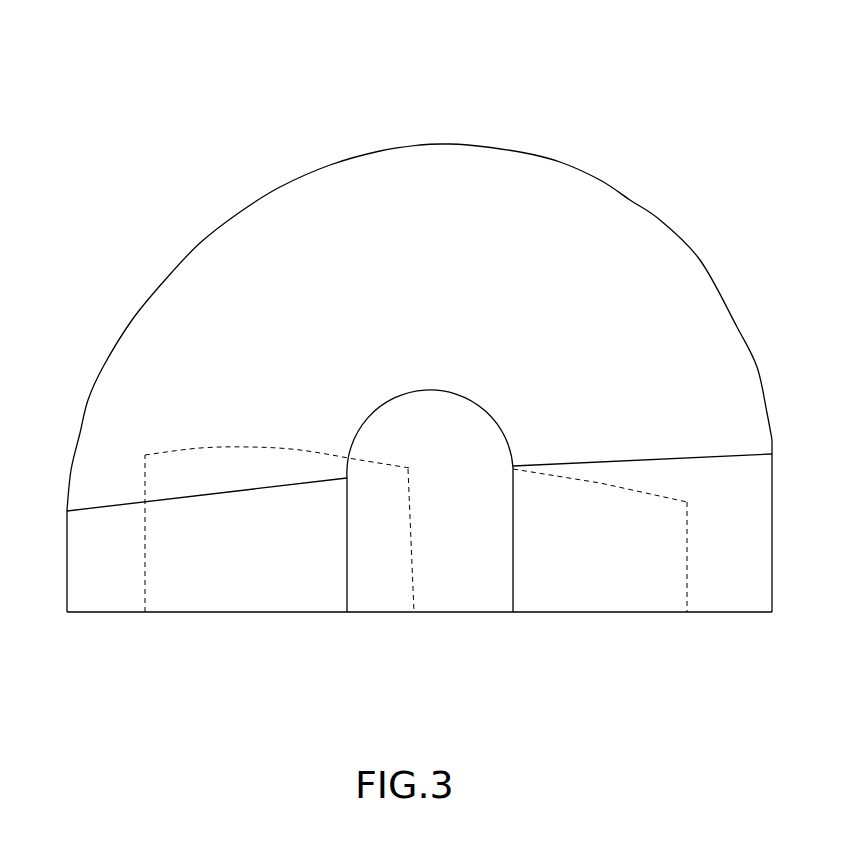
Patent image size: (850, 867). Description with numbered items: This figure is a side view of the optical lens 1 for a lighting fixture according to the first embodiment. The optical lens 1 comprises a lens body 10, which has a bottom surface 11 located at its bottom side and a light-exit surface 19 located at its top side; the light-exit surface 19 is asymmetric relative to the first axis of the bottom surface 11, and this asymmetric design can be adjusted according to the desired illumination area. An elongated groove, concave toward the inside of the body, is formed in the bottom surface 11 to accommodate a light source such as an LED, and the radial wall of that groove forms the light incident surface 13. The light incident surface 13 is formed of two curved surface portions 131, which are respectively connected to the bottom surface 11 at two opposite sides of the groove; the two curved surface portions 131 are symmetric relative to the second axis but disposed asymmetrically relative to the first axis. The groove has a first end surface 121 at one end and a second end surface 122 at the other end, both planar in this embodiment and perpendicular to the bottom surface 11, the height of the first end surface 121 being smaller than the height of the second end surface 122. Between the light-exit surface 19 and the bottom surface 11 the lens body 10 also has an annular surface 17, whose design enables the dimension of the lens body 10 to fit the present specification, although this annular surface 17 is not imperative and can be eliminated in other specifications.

The optical lens 1 is at (640, 137).
The lens body 10 is at (714, 250).
The bottom surface 11 is at (728, 612).
The light incident surface 13 is at (477, 57).
The curved surface portions 131 is at (285, 450).
The annular surface 17 is at (772, 548).
The light-exit surface 19 is at (562, 162).
The first end surface 121 is at (687, 557).
The second end surface 122 is at (145, 560).